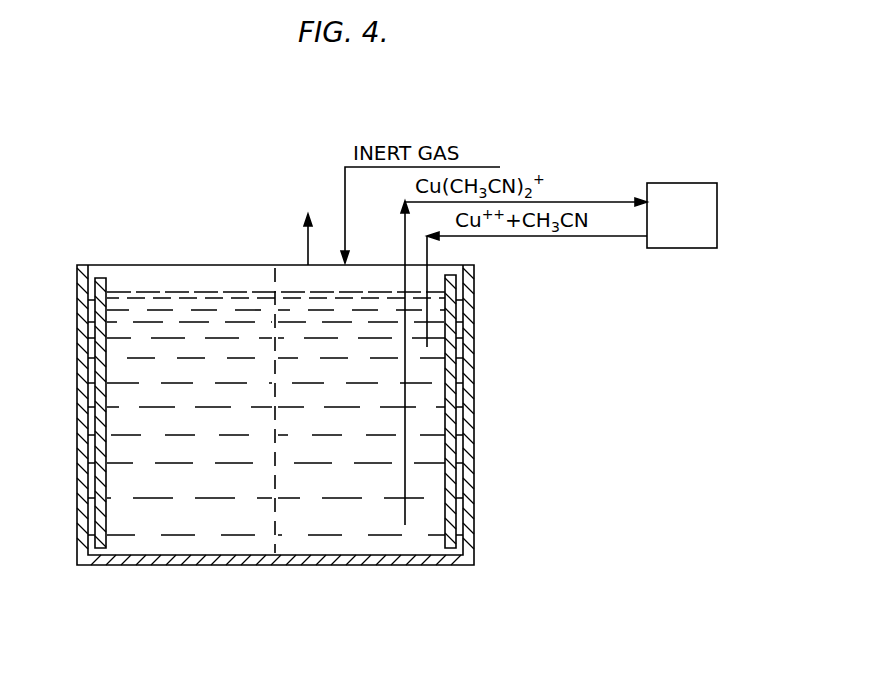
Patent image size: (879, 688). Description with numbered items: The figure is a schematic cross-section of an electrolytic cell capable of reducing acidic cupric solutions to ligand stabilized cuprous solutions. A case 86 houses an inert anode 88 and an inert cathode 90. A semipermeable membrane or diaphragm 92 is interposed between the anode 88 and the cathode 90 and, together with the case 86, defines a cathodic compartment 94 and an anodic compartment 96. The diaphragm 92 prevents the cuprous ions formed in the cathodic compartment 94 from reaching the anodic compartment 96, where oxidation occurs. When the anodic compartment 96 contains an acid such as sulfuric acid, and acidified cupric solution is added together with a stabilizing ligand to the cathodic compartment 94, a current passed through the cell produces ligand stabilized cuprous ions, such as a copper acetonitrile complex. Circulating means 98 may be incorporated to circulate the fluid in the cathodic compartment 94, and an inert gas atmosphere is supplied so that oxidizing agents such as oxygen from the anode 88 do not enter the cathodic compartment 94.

The case 86 is at (475, 447).
The inert anode 88 is at (100, 405).
The inert cathode 90 is at (446, 343).
The semipermeable membrane or diaphragm 92 is at (273, 525).
The cathodic compartment 94 is at (357, 440).
The anodic compartment 96 is at (215, 440).
The circulating means 98 is at (699, 228).